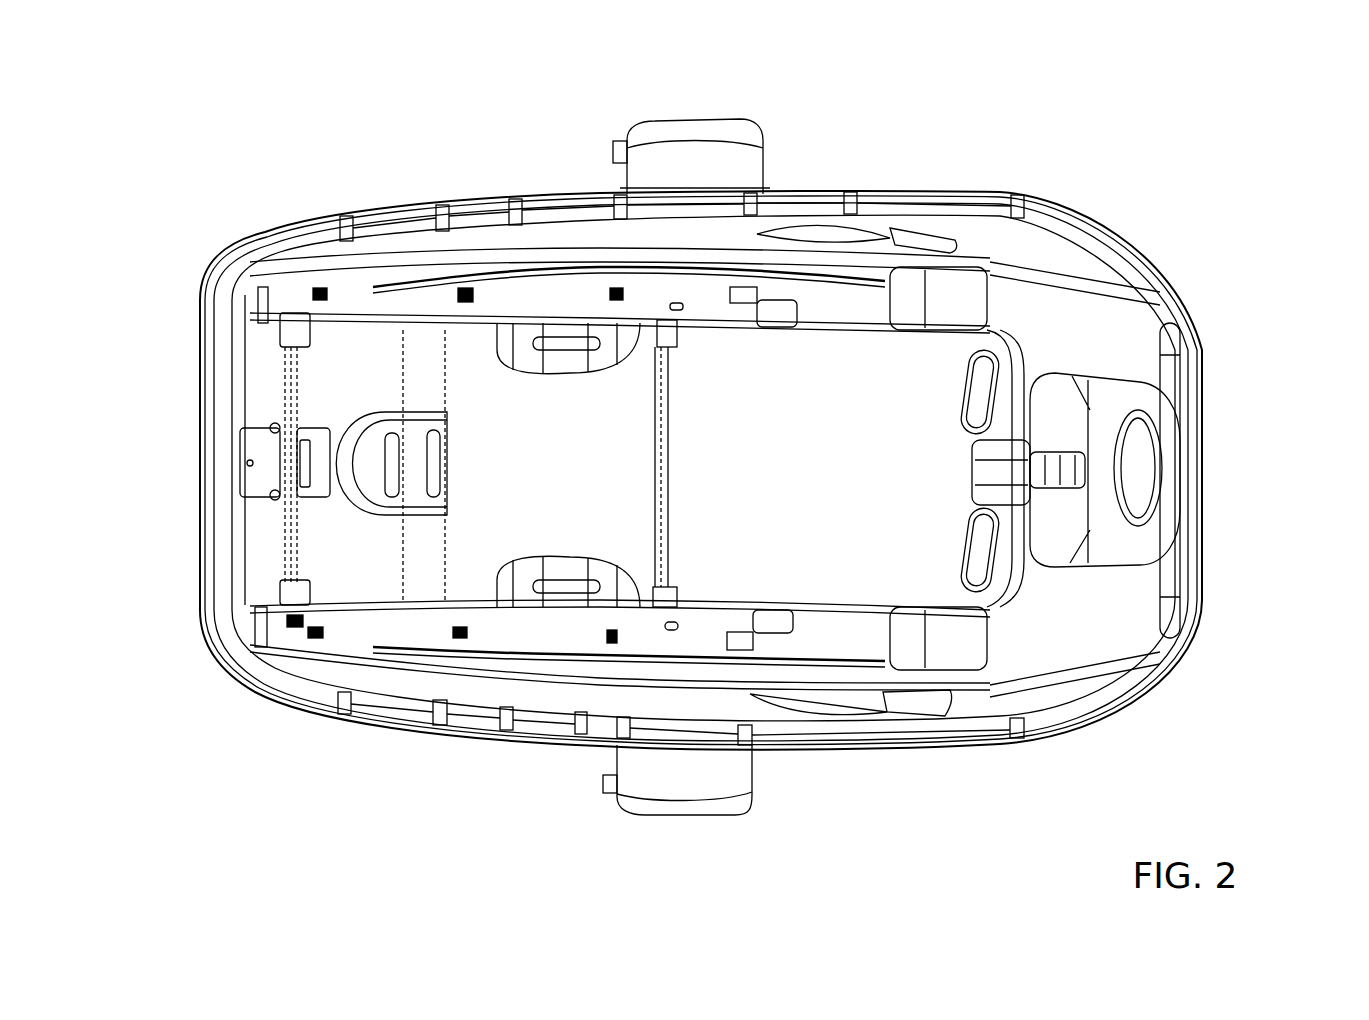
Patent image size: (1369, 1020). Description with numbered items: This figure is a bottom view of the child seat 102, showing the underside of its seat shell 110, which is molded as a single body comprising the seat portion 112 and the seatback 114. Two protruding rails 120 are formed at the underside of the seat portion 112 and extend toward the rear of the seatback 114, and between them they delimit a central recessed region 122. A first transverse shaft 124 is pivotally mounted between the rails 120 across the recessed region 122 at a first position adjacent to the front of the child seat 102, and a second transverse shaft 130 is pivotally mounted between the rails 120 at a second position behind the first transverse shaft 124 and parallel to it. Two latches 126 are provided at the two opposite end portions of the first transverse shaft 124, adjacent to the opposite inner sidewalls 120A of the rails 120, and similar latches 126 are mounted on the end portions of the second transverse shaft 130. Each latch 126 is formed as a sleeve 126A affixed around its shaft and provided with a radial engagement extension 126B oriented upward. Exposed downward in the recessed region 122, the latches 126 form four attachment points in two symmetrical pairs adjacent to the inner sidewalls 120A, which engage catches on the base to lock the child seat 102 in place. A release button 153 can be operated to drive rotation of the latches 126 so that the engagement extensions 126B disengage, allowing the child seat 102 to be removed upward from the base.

The child seat 102 is at (1240, 102).
The seat shell 110 is at (972, 715).
The seat portion 112 is at (388, 245).
The seatback 114 is at (985, 232).
The rails 120 is at (485, 270).
The inner sidewalls 120A is at (855, 345).
The central recessed region 122 is at (736, 343).
The first transverse shaft 124 is at (283, 520).
The latches 126 is at (645, 318).
The sleeve 126A is at (290, 338).
The radial engagement extension 126B is at (262, 290).
The second transverse shaft 130 is at (663, 470).
The release button 153 is at (1197, 446).